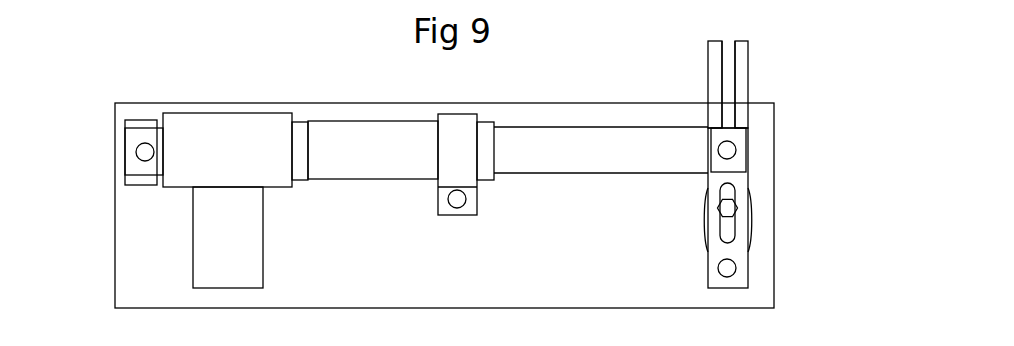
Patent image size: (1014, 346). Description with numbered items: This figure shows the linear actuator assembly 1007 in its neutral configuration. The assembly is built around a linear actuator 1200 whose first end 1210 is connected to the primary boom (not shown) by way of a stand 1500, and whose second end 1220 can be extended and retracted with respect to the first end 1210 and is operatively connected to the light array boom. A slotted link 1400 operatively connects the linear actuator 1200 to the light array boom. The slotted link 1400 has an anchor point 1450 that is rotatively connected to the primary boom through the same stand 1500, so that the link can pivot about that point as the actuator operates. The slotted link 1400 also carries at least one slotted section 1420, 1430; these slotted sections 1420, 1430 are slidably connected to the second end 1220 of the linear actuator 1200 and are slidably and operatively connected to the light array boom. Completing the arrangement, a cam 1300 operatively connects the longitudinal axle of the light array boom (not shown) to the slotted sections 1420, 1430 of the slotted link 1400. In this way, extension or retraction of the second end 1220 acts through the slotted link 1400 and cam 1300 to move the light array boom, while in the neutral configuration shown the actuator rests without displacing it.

The linear actuator assembly 1007 is at (459, 294).
The linear actuator 1200 is at (500, 164).
The first end 1210 is at (133, 162).
The second end 1220 is at (738, 142).
The cam 1300 is at (730, 210).
The slotted link 1400 is at (713, 79).
The slotted section 1420 is at (737, 67).
The slotted section 1430 is at (735, 229).
The anchor point 1450 is at (730, 268).
The stand 1500 is at (249, 200).